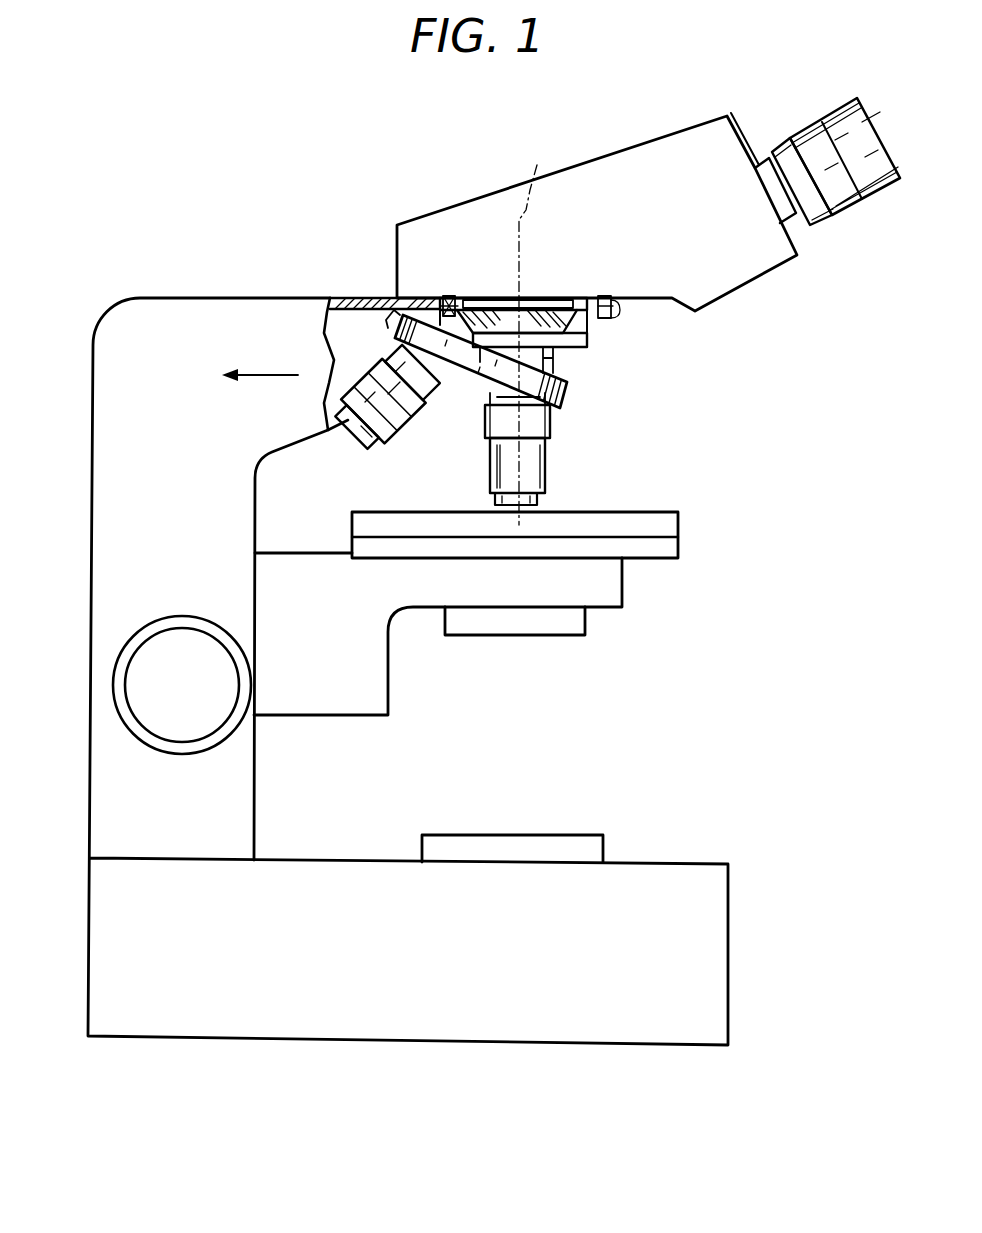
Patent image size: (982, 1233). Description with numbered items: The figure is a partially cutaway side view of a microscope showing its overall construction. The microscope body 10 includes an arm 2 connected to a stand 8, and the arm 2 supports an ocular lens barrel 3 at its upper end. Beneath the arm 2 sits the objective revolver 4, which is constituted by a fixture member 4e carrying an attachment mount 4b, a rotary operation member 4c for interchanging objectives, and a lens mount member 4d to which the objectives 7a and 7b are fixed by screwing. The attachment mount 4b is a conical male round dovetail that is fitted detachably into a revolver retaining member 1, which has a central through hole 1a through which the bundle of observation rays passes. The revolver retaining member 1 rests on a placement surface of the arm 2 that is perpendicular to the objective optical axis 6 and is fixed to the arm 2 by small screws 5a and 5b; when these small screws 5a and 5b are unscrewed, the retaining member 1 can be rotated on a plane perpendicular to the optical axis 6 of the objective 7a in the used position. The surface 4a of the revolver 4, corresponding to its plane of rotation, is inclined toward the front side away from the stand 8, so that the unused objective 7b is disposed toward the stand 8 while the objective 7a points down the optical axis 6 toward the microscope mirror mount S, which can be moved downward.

The revolver retaining member 1 is at (583, 330).
The through hole 1a is at (540, 320).
The arm 2 is at (355, 297).
The ocular lens barrel 3 is at (465, 230).
The objective revolver 4 is at (563, 418).
The surface of the revolver 4a is at (568, 378).
The attachment mount 4b is at (582, 353).
The rotary operation member 4c is at (572, 403).
The lens mount member 4d is at (475, 388).
The fixture member 4e is at (553, 360).
The small screw 5a is at (612, 297).
The small screw 5b is at (445, 293).
The objective optical axis 6 is at (532, 332).
The objective 7a is at (537, 493).
The objective 7b is at (393, 440).
The stand 8 is at (167, 517).
The microscope body 10 is at (190, 292).
The microscope mirror mount S is at (452, 545).